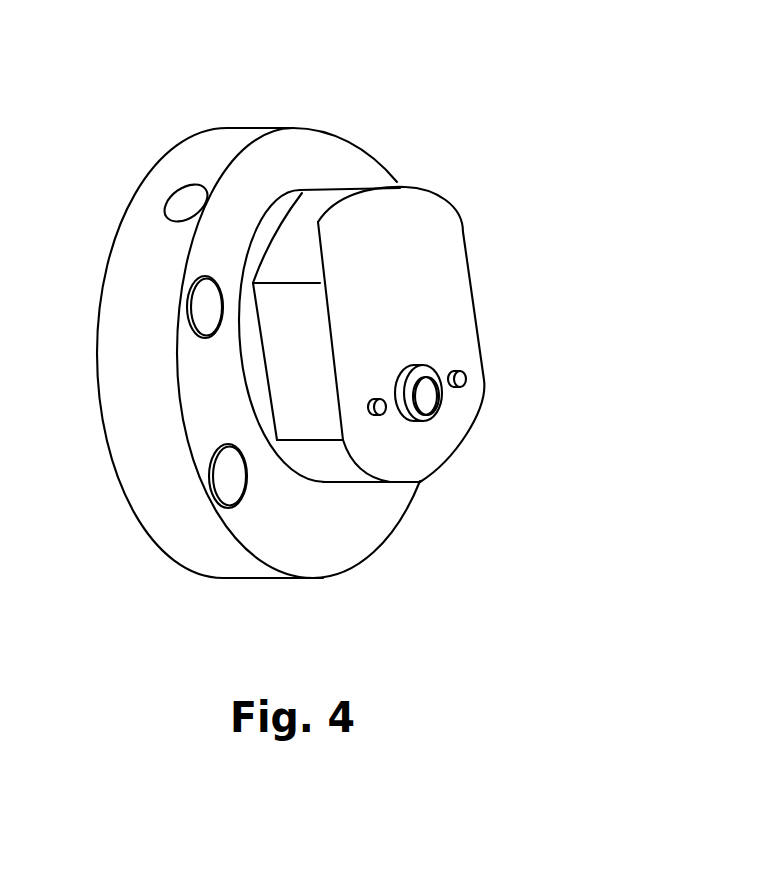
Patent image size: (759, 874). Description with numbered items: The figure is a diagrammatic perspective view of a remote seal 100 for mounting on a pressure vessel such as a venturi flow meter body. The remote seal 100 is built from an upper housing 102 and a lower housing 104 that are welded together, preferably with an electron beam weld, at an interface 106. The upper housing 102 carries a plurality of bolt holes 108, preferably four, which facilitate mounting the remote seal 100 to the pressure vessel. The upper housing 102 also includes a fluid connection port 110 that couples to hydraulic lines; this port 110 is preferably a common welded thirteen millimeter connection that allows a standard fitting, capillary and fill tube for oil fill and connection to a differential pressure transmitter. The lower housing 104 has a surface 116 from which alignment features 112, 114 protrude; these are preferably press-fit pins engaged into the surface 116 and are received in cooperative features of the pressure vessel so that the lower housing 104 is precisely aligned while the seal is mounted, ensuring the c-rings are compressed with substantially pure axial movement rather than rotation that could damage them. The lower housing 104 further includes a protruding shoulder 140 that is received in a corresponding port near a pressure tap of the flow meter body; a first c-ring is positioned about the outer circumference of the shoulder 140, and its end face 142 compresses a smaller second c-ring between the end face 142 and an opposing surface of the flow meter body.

The remote seal 100 is at (553, 147).
The upper housing 102 is at (312, 128).
The lower housing 104 is at (415, 334).
The interface 106 is at (286, 200).
The bolt holes 108 is at (198, 306).
The fluid connection port 110 is at (180, 200).
The alignment feature 112 is at (388, 412).
The alignment feature 114 is at (466, 378).
The surface 116 is at (437, 290).
The protruding shoulder 140 is at (428, 398).
The end face 142 is at (430, 417).